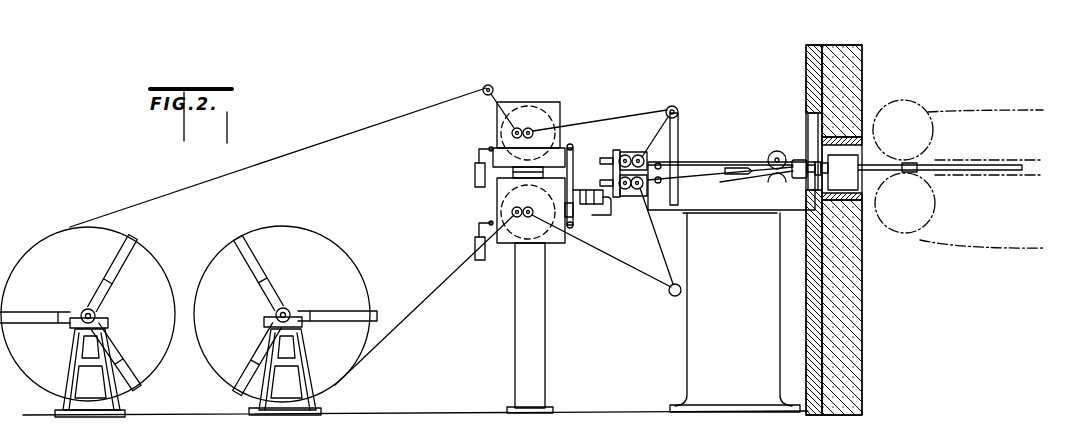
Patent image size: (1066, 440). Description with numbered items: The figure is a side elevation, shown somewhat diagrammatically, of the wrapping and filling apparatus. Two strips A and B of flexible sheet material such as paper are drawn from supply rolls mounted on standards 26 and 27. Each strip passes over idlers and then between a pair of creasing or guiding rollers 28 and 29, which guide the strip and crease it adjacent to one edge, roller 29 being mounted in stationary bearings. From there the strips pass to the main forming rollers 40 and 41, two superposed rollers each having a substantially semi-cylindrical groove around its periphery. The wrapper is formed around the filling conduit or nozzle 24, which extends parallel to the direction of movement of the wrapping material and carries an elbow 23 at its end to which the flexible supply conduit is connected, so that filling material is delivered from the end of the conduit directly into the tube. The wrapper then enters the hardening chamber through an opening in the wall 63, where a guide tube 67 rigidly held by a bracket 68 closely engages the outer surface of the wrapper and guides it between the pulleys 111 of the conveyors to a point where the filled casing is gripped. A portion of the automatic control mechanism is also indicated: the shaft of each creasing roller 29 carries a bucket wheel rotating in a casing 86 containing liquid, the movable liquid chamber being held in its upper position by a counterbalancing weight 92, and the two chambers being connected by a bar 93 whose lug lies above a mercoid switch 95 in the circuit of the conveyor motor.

The standard 26 is at (74, 357).
The standard 27 is at (297, 362).
The casing 86 is at (533, 101).
The counterbalancing weight 92 is at (475, 176).
The bar 93 is at (573, 167).
The mercoid switch 95 is at (592, 216).
The creasing or guiding roller 28 is at (626, 154).
The creasing or guiding roller 29 is at (645, 157).
The filling conduit or nozzle 24 is at (750, 168).
The elbow 23 is at (725, 173).
The main forming roller 40 is at (776, 151).
The main forming roller 41 is at (773, 187).
The wall 63 is at (862, 58).
The bracket 68 is at (841, 167).
The guide tube 67 is at (900, 177).
The pulley 111 is at (905, 102).
The strip A is at (378, 123).
The strip B is at (428, 305).